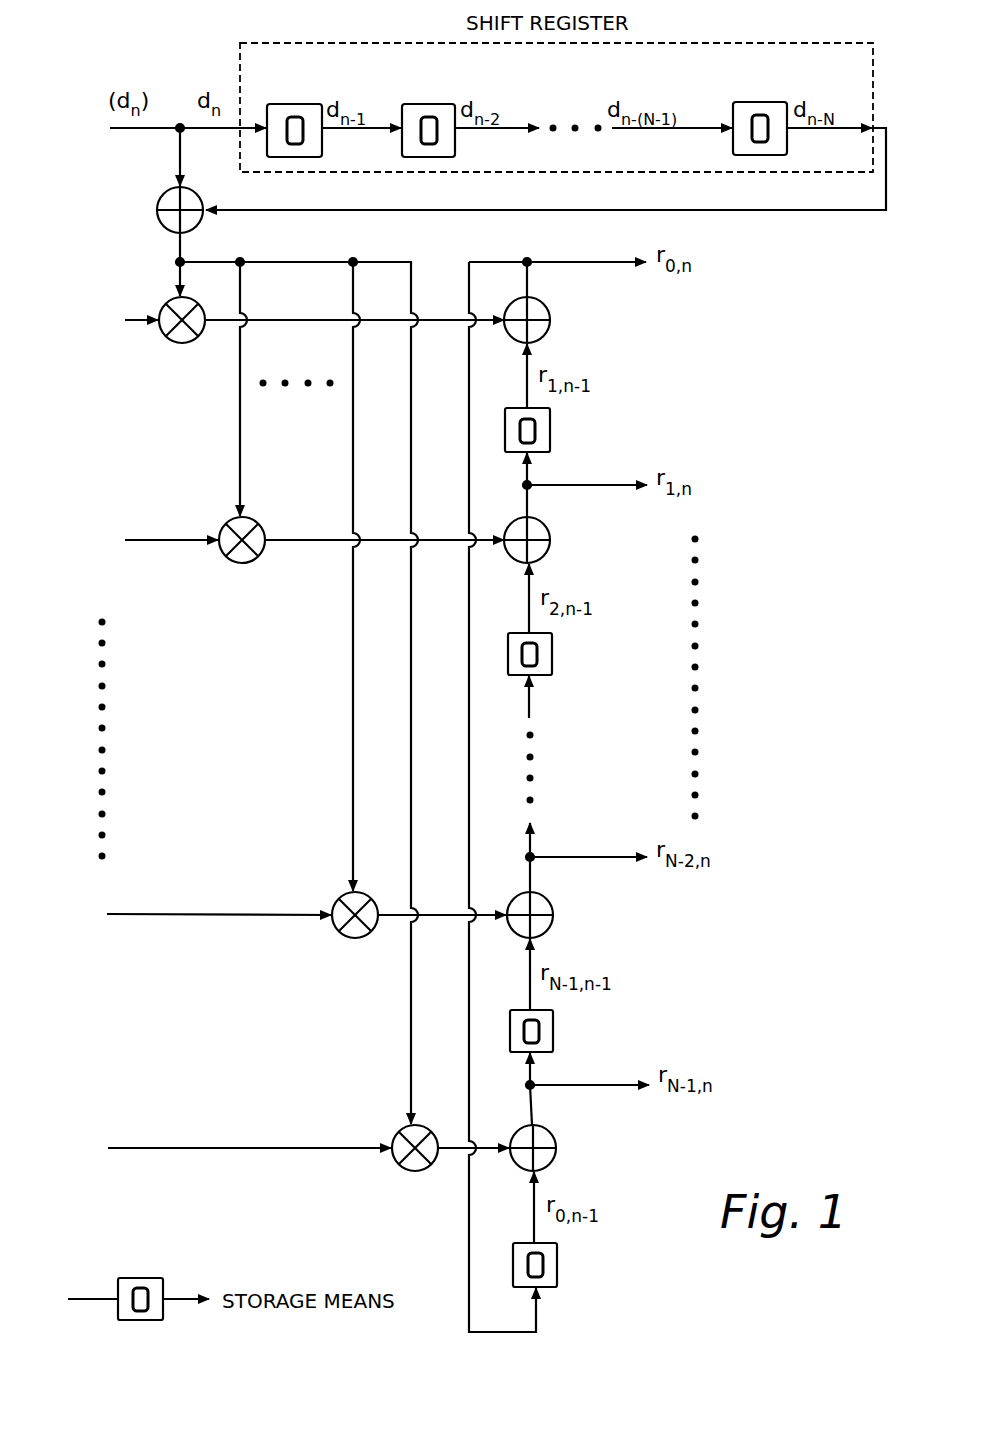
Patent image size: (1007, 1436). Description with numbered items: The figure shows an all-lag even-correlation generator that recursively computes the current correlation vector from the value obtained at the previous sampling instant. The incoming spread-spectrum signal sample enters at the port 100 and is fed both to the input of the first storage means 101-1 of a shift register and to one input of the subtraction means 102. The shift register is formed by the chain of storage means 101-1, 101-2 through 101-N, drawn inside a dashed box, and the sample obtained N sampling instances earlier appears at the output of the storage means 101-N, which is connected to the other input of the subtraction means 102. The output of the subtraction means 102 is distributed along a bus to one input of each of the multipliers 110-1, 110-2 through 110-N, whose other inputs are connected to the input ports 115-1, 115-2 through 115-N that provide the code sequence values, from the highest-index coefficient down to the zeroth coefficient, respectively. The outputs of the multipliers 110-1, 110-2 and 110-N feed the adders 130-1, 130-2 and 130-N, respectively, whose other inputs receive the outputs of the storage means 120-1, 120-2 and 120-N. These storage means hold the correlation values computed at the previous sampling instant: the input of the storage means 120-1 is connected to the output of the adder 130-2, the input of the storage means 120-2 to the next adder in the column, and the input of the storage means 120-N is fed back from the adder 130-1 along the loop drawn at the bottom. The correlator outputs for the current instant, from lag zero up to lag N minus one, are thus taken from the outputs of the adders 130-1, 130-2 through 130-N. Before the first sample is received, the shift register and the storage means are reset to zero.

The port 100 is at (144, 144).
The storage means 101-1 is at (292, 104).
The storage means 101-2 is at (427, 104).
The storage means 101-N is at (758, 102).
The subtraction means 102 is at (160, 217).
The multiplier 110-1 is at (168, 337).
The multiplier 110-2 is at (226, 557).
The multiplier 110-N is at (400, 1165).
The input port 115-1 is at (108, 326).
The input port 115-2 is at (138, 549).
The input port 115-N is at (224, 1156).
The storage means 120-1 is at (550, 424).
The storage means 120-2 is at (552, 648).
The storage means 120-N is at (557, 1260).
The adder 130-1 is at (545, 336).
The adder 130-2 is at (545, 556).
The adder 130-N is at (551, 1164).